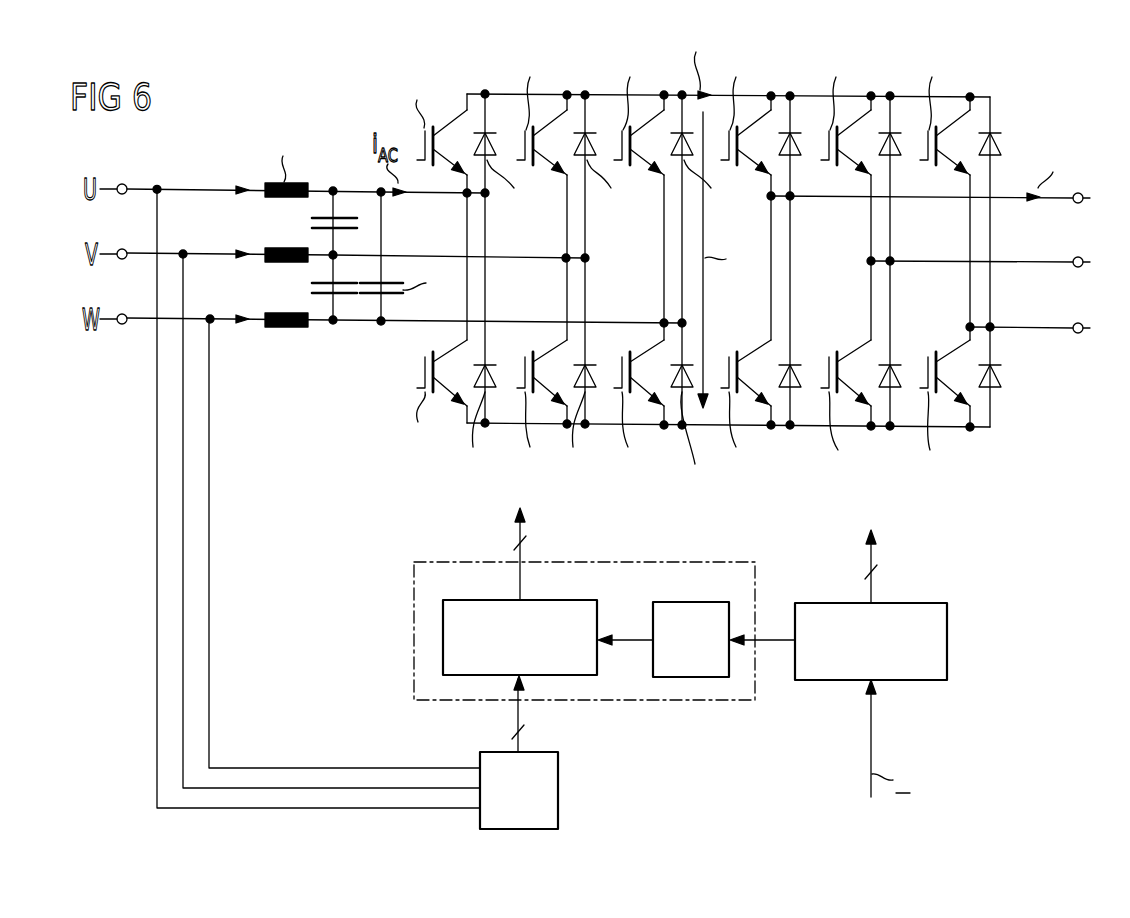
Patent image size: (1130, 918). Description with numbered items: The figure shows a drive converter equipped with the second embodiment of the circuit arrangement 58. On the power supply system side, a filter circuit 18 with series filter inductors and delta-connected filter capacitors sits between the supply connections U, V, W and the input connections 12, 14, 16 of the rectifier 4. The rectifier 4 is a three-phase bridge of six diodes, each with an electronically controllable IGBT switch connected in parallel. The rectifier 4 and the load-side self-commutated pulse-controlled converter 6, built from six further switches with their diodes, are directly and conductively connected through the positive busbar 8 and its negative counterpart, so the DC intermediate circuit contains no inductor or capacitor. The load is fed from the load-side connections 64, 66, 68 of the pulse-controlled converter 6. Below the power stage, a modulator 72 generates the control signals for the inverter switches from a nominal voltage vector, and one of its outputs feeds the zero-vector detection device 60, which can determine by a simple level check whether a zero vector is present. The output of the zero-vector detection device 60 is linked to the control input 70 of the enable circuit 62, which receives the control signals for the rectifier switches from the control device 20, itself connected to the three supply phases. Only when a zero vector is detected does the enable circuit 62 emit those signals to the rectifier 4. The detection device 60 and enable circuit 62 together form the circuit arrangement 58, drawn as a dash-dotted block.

The rectifier 4 is at (640, 273).
The self-commutated pulse-controlled converter 6 is at (833, 273).
The positive busbar 8 is at (808, 93).
The input connection 12 is at (487, 196).
The input connection 14 is at (565, 260).
The input connection 16 is at (704, 324).
The filter circuit 18 is at (443, 238).
The control device 20 is at (559, 790).
The circuit arrangement 58 is at (413, 633).
The zero-vector detection device 60 is at (673, 602).
The enable circuit 62 is at (545, 600).
The load-side connection 64 is at (942, 172).
The load-side connection 66 is at (992, 262).
The load-side connection 68 is at (1041, 328).
The control input 70 is at (600, 643).
The modulator 72 is at (948, 645).